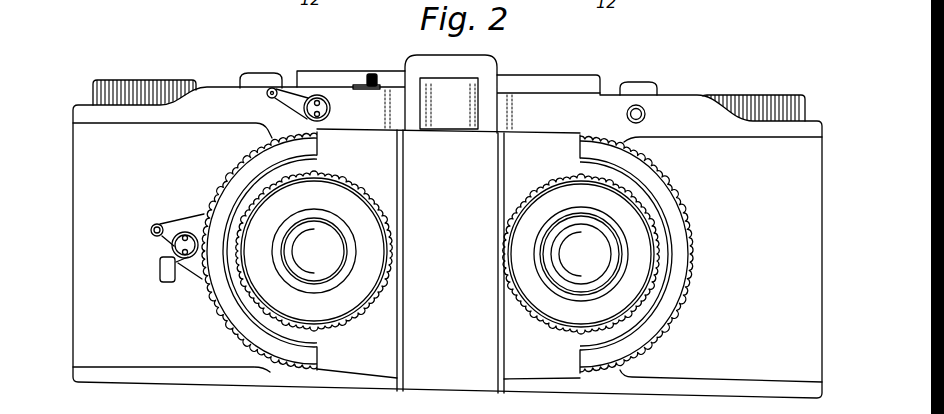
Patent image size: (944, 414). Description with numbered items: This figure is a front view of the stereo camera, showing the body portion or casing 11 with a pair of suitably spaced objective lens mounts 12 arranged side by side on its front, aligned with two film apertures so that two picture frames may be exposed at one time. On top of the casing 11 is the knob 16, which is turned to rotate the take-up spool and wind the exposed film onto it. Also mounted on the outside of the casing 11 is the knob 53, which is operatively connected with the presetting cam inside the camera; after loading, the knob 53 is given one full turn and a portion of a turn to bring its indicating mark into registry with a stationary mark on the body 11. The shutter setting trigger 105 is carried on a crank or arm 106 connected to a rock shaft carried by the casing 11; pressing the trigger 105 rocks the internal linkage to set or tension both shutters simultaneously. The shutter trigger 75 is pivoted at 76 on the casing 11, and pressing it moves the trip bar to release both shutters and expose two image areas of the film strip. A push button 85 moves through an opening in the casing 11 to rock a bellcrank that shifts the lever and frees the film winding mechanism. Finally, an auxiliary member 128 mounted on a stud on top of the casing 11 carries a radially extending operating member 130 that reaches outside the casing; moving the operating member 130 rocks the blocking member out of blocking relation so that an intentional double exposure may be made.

The body portion or casing 11 is at (777, 378).
The objective lens mounts 12 is at (325, 263).
The knob 16 is at (147, 80).
The knob 53 is at (265, 77).
The shutter trigger 75 is at (156, 223).
The pivot 76 is at (160, 265).
The push button 85 is at (646, 114).
The shutter setting trigger 105 is at (266, 97).
The crank or arm 106 is at (321, 95).
The auxiliary member 128 is at (372, 74).
The operating member 130 is at (373, 90).